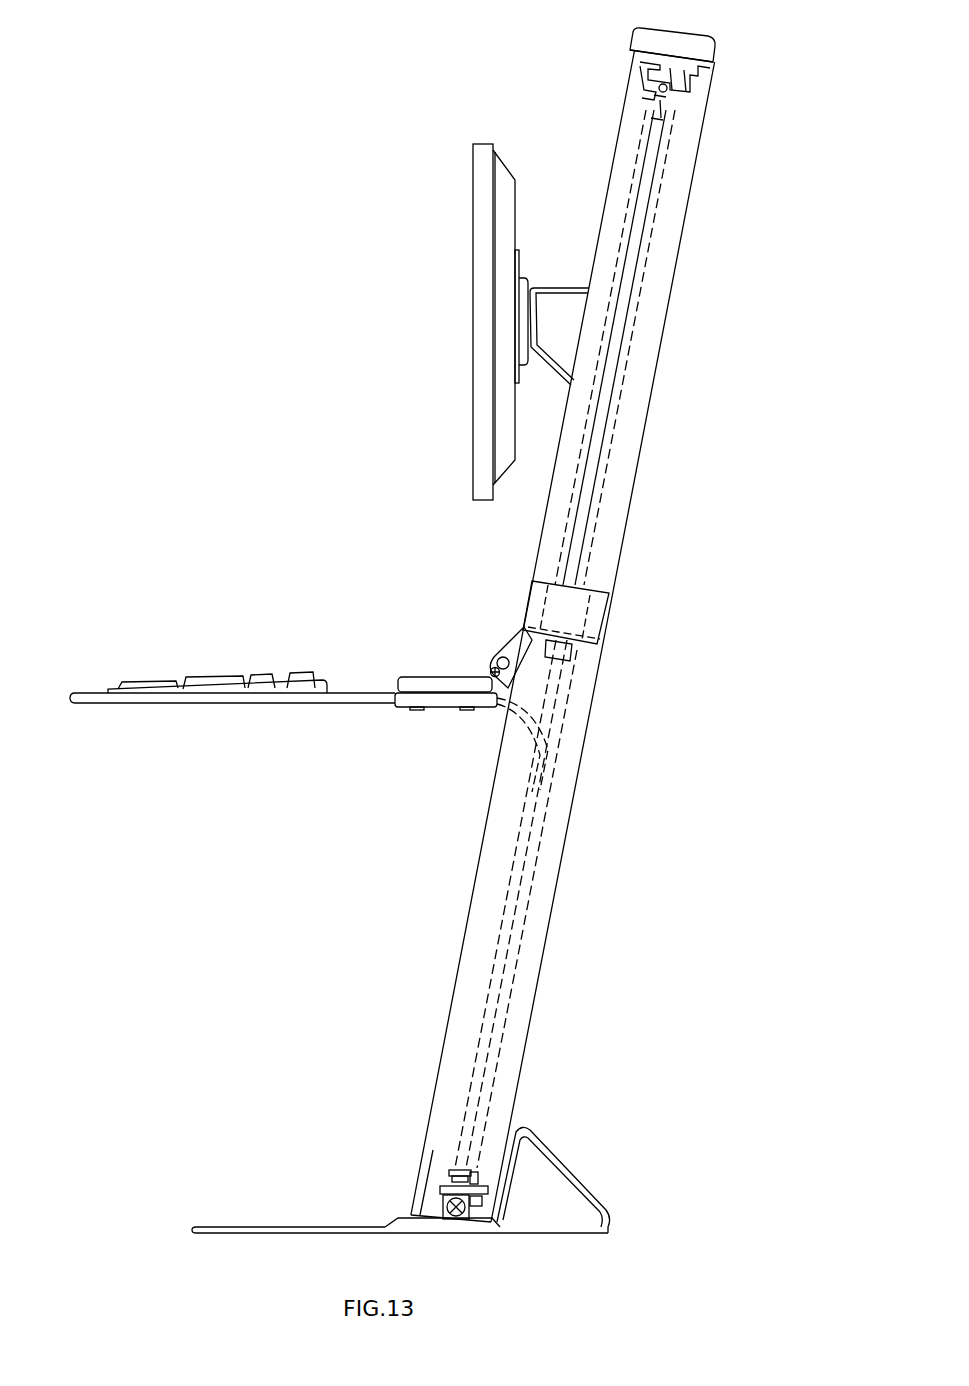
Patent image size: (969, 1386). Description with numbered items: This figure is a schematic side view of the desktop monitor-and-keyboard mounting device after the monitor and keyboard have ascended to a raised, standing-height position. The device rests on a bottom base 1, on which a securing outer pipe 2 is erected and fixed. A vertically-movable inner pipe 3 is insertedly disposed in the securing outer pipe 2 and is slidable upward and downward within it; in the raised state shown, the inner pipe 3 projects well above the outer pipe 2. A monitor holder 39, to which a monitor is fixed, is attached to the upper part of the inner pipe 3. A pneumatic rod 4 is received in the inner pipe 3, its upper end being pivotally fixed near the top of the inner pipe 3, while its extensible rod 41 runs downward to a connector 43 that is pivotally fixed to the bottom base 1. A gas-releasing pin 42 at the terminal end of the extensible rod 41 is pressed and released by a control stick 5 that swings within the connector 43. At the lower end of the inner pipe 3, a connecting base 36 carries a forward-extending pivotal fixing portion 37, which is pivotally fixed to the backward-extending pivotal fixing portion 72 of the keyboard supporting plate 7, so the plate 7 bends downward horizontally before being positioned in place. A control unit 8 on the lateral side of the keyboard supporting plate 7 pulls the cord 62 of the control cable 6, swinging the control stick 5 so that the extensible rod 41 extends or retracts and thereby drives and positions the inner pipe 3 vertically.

The bottom base 1 is at (579, 1178).
The securing outer pipe 2 is at (553, 912).
The vertically-movable inner pipe 3 is at (672, 272).
The pneumatic rod 4 is at (620, 396).
The control stick 5 is at (440, 1198).
The control cable 6 is at (520, 975).
The keyboard supporting plate 7 is at (170, 705).
The control unit 8 is at (441, 677).
The connecting base 36 is at (590, 634).
The pivotal fixing portion 37 is at (517, 640).
The monitor holder 39 is at (518, 268).
The extensible rod 41 is at (505, 906).
The gas-releasing pin 42 is at (447, 1180).
The connector 43 is at (438, 1208).
The cord 62 is at (478, 1200).
The pivotal fixing portion 72 is at (478, 676).